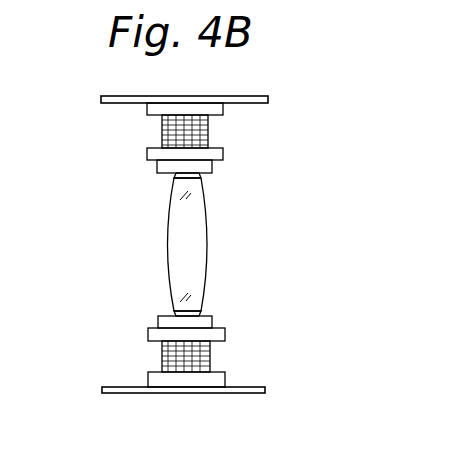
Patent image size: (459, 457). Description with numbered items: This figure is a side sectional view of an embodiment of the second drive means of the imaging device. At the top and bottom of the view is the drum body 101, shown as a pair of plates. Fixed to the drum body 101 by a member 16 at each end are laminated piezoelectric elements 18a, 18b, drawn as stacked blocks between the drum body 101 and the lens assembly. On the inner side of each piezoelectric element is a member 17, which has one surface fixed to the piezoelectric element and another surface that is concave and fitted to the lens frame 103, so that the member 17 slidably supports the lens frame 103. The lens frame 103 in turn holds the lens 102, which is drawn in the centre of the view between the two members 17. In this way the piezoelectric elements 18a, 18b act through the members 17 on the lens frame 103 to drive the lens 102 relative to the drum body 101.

The drum body 101 is at (266, 96).
The member 16 is at (223, 108).
The member 17 is at (147, 158).
The laminated piezoelectric element 18a is at (162, 130).
The laminated piezoelectric element 18b is at (162, 358).
The lens 102 is at (206, 232).
The lens frame 103 is at (203, 176).